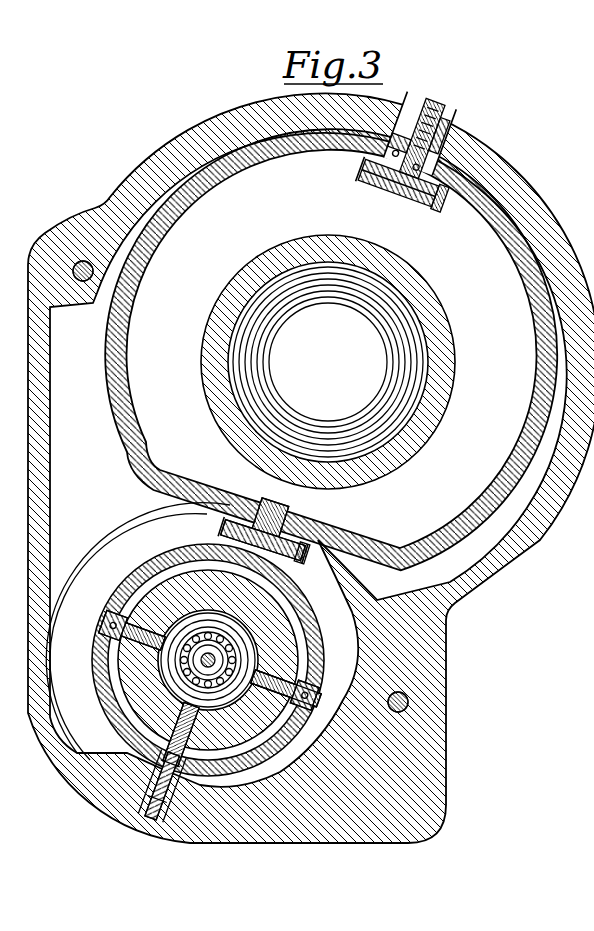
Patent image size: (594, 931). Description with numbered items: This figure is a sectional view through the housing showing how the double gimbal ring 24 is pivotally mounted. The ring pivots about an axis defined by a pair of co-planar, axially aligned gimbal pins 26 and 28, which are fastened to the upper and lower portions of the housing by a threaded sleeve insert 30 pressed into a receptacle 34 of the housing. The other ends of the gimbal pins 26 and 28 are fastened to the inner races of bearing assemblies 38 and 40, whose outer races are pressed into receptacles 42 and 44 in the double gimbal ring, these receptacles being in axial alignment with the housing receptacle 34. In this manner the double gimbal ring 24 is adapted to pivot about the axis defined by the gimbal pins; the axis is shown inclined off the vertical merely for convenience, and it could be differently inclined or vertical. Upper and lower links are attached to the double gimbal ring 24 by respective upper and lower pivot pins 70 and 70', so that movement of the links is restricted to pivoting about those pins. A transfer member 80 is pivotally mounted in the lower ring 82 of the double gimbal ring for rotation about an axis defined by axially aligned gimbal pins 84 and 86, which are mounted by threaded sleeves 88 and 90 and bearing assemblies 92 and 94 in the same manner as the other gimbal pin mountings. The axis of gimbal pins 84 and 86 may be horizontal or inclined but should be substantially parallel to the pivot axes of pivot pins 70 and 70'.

The double gimbal ring 24 is at (487, 200).
The gimbal pin 26 is at (433, 127).
The gimbal pin 28 is at (157, 800).
The threaded sleeve insert 30 is at (418, 107).
The receptacle 34 is at (443, 122).
The bearing assembly 38 is at (398, 128).
The bearing assembly 40 is at (197, 777).
The receptacle 42 is at (452, 180).
The receptacle 44 is at (157, 753).
The pivot pin 70 is at (453, 218).
The pivot pin 70' is at (314, 571).
The transfer member 80 is at (143, 687).
The lower ring 82 is at (190, 557).
The gimbal pin 84 is at (110, 617).
The gimbal pin 86 is at (300, 650).
The threaded sleeve 88 is at (123, 603).
The threaded sleeve 90 is at (333, 670).
The bearing assembly 92 is at (127, 657).
The bearing assembly 94 is at (300, 618).